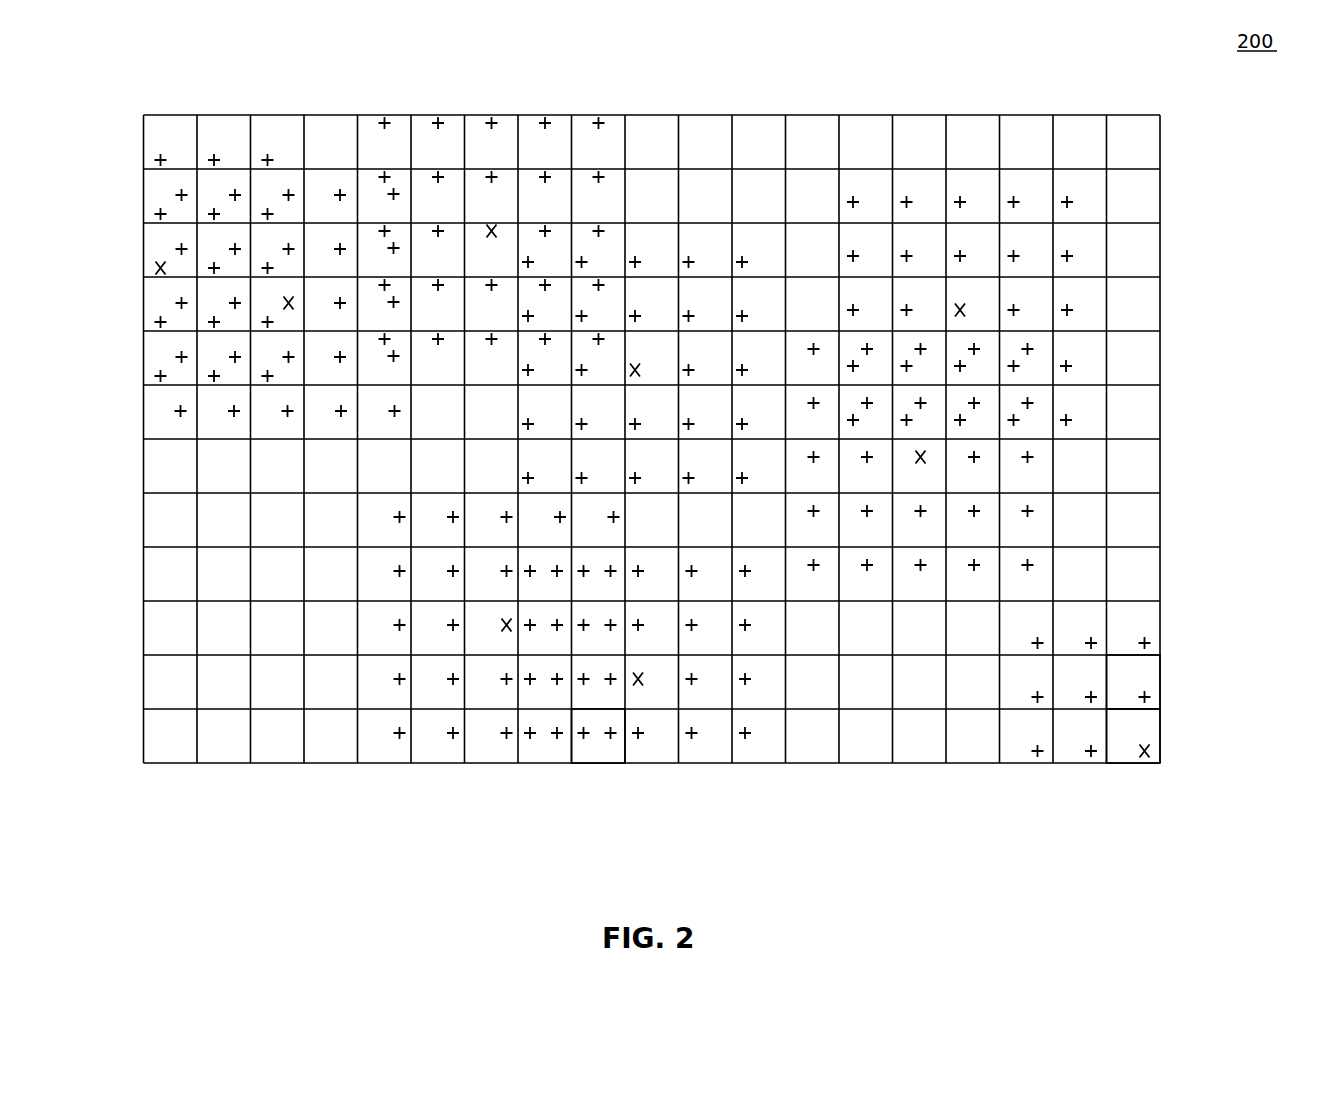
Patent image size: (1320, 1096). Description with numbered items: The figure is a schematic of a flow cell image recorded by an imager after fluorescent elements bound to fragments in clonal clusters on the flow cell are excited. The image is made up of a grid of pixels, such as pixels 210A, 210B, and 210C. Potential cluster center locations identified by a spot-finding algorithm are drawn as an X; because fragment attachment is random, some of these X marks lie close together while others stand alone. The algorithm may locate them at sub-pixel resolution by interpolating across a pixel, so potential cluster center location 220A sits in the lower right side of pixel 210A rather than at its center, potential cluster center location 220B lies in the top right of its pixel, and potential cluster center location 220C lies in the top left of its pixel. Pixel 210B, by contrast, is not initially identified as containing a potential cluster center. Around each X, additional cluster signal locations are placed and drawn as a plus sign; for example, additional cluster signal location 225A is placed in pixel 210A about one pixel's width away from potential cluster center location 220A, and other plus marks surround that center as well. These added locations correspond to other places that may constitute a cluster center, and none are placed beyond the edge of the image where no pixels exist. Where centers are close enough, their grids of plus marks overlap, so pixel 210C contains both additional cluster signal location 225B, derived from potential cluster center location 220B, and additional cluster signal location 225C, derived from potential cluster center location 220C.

The pixel 210A is at (1162, 668).
The pixel 210B is at (1162, 733).
The pixel 210C is at (588, 768).
The potential cluster center location 220A is at (1140, 754).
The potential cluster center location 220B is at (644, 688).
The potential cluster center location 220C is at (498, 636).
The additional cluster signal location 225A is at (1150, 698).
The additional cluster signal location 225B is at (612, 740).
The additional cluster signal location 225C is at (583, 740).